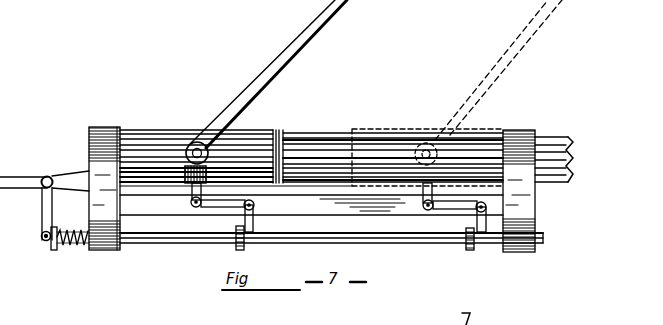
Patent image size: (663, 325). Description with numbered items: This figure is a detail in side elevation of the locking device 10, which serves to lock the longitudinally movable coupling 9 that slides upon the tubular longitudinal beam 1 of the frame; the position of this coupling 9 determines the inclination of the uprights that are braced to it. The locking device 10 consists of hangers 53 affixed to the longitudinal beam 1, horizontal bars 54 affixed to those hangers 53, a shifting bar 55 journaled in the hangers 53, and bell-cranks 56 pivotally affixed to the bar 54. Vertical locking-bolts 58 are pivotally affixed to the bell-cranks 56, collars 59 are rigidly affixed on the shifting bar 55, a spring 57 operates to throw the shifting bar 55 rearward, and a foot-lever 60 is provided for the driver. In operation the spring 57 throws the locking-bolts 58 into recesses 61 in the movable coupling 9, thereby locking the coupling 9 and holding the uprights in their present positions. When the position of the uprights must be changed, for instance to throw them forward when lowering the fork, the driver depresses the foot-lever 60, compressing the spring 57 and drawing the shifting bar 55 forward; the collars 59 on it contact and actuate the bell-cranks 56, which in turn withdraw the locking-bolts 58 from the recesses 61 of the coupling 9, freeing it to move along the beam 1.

The longitudinal beam 1 is at (436, 93).
The coupling 9 is at (254, 128).
The locking device 10 is at (233, 91).
The hangers 53 is at (312, 181).
The horizontal bars 54 is at (311, 200).
The shifting bar 55 is at (331, 229).
The bell-cranks 56 is at (341, 217).
The spring 57 is at (70, 248).
The vertical locking-bolts 58 is at (190, 194).
The collars 59 is at (236, 245).
The foot-lever 60 is at (44, 200).
The recesses 61 is at (186, 170).